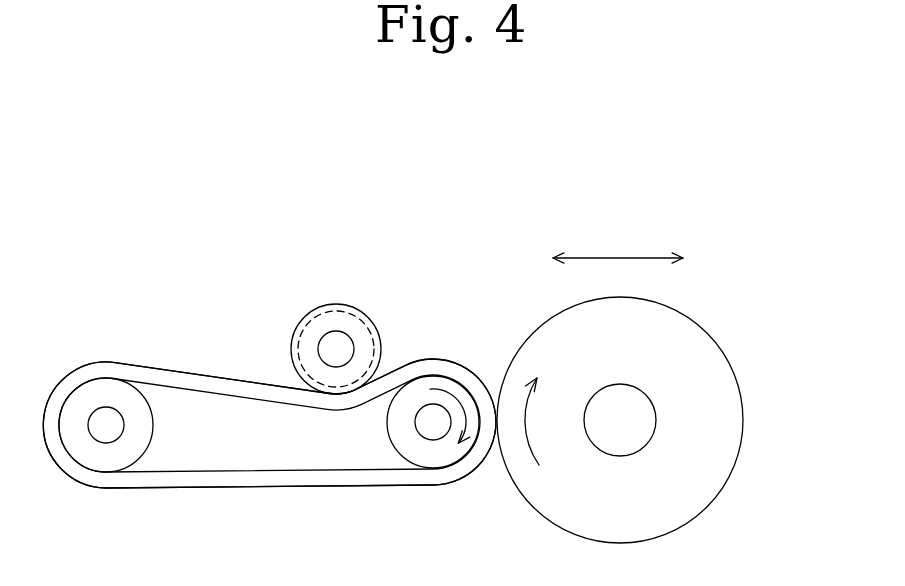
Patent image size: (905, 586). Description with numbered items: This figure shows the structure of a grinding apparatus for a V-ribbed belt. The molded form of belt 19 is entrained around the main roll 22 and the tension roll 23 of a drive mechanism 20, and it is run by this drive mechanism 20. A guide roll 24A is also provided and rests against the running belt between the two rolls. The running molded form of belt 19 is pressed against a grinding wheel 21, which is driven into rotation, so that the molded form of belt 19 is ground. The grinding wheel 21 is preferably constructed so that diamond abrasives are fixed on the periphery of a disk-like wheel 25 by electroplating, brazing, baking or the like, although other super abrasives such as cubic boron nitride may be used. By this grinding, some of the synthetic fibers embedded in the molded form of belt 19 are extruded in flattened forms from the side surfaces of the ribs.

The molded form of belt 19 is at (420, 365).
The drive mechanism 20 is at (205, 362).
The grinding wheel 21 is at (735, 350).
The main roll 22 is at (450, 387).
The tension roll 23 is at (107, 392).
The guide roll 24A is at (340, 322).
The disk-like wheel 25 is at (725, 410).